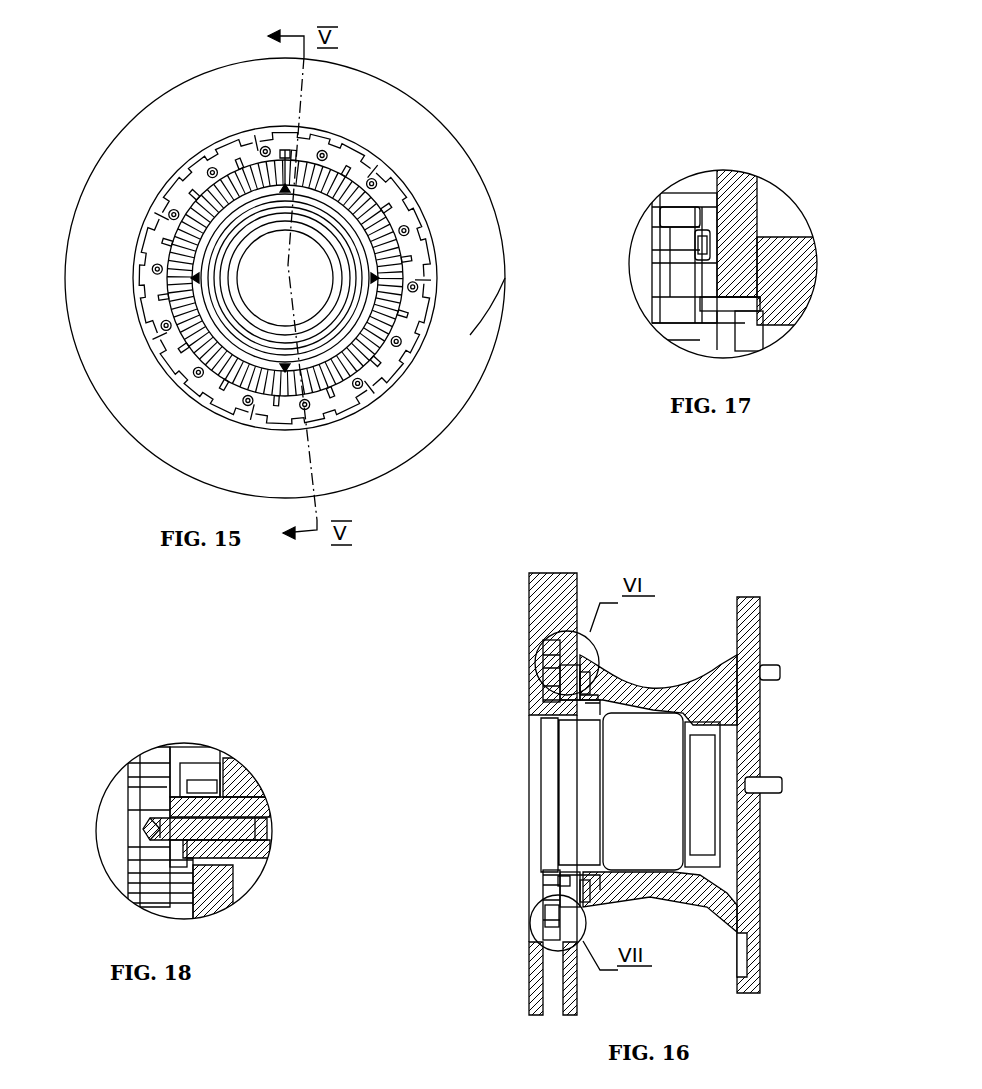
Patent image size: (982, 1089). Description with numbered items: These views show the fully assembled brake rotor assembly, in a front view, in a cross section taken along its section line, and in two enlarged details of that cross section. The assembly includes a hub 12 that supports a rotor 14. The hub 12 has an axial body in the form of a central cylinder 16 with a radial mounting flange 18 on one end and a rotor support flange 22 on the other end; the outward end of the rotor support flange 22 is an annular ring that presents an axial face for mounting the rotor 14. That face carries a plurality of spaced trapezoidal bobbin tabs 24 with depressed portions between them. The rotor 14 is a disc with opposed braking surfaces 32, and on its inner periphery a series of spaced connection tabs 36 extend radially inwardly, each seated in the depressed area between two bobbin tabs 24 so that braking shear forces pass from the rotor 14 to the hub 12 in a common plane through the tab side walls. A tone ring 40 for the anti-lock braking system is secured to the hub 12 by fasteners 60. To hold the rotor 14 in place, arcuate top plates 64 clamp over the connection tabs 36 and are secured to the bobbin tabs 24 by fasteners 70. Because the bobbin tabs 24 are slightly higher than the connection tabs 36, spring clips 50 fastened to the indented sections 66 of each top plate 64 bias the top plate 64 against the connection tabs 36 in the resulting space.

In FIG. 16, the hub 12 is at (698, 680).
In FIG. 15, the rotor 14 is at (440, 117).
In FIG. 16, the rotor 14 is at (577, 590).
In FIG. 15, the central cylinder 16 is at (308, 313).
In FIG. 16, the radial mounting flange 18 is at (763, 598).
In FIG. 17, the rotor support flange 22 is at (790, 241).
In FIG. 16, the rotor support flange 22 is at (583, 665).
In FIG. 18, the bobbin tab 24 is at (232, 862).
In FIG. 15, the braking surface 32 is at (482, 280).
In FIG. 17, the connection tab 36 is at (740, 248).
In FIG. 16, the connection tab 36 is at (565, 650).
In FIG. 15, the tone ring 40 is at (195, 368).
In FIG. 15, the spring clip 50 is at (150, 293).
In FIG. 17, the spring clip 50 is at (702, 235).
In FIG. 15, the fastener 60 is at (388, 307).
In FIG. 16, the fastener 60 is at (585, 707).
In FIG. 15, the top plate 64 is at (340, 153).
In FIG. 18, the top plate 64 is at (173, 862).
In FIG. 16, the top plate 64 is at (545, 886).
In FIG. 17, the indented section 66 is at (698, 263).
In FIG. 15, the fastener 70 is at (408, 226).
In FIG. 18, the fastener 70 is at (152, 822).
In FIG. 16, the fastener 70 is at (542, 911).